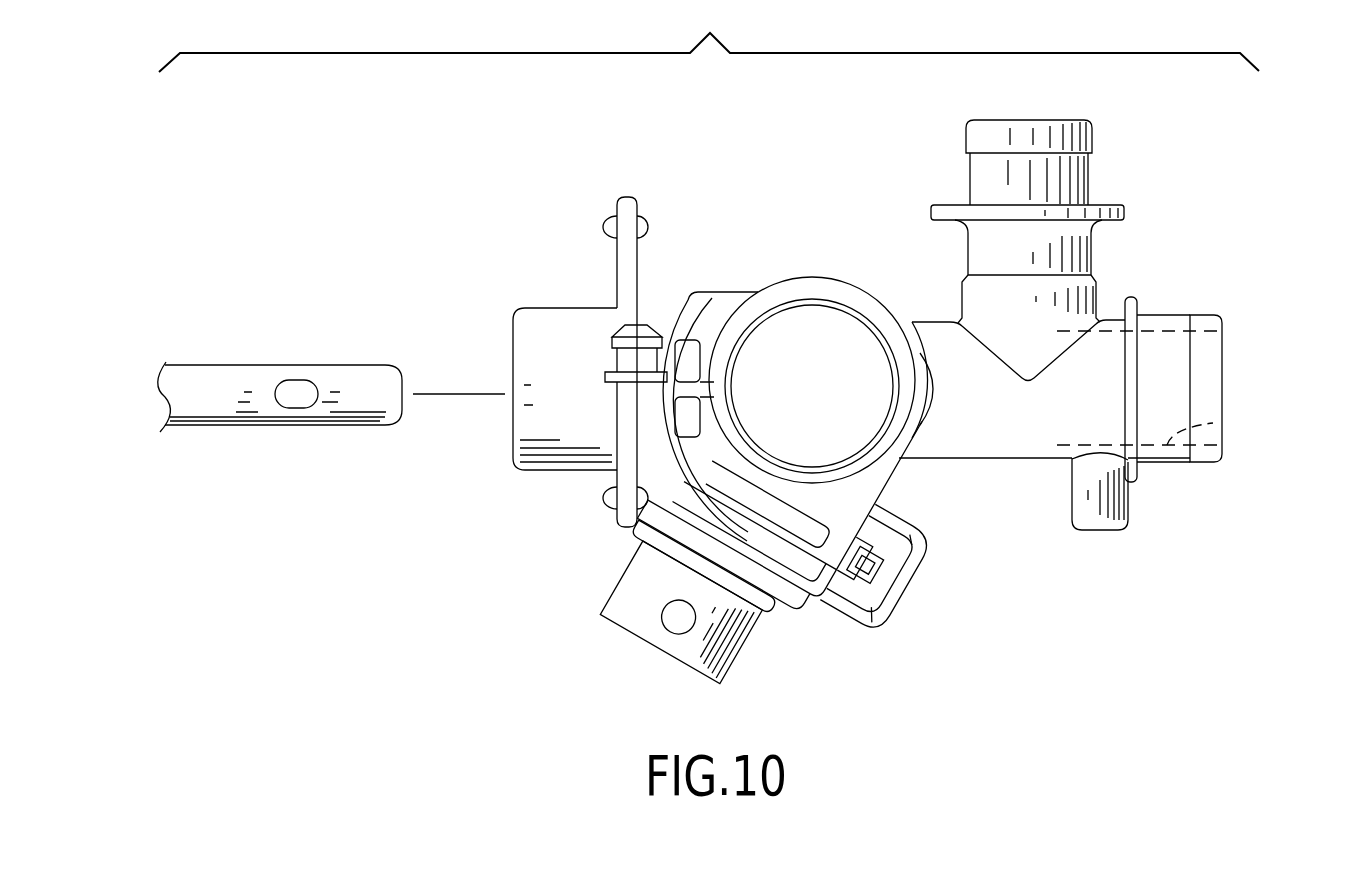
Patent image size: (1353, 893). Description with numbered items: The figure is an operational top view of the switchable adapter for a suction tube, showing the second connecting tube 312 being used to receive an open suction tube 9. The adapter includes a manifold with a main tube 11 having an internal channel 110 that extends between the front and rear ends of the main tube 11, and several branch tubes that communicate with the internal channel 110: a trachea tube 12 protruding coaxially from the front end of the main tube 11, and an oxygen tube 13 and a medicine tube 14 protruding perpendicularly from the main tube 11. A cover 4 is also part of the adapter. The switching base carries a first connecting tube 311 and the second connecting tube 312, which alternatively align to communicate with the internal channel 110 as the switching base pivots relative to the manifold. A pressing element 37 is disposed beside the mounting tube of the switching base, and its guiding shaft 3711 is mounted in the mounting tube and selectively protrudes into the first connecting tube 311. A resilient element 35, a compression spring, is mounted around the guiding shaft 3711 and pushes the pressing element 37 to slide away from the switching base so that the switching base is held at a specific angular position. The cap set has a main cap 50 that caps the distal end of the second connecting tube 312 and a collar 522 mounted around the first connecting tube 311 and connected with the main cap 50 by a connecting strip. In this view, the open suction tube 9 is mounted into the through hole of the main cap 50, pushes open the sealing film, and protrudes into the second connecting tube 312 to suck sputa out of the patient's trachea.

The cover 4 is at (777, 283).
The open suction tube 9 is at (222, 378).
The main tube 11 is at (930, 330).
The trachea tube 12 is at (1202, 322).
The oxygen tube 13 is at (972, 137).
The medicine tube 14 is at (1128, 498).
The resilient element 35 is at (874, 556).
The pressing element 37 is at (910, 596).
The main cap 50 is at (513, 322).
The internal channel 110 is at (1230, 422).
The first connecting tube 311 is at (625, 612).
The second connecting tube 312 is at (640, 410).
The collar 522 is at (640, 530).
The guiding shaft 3711 is at (876, 558).